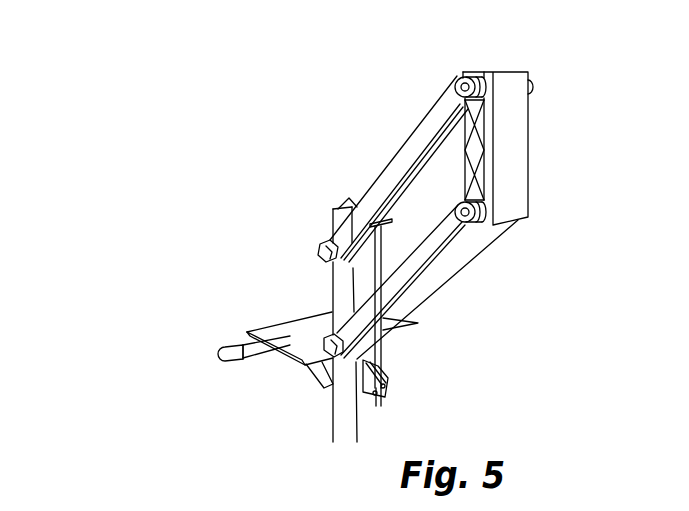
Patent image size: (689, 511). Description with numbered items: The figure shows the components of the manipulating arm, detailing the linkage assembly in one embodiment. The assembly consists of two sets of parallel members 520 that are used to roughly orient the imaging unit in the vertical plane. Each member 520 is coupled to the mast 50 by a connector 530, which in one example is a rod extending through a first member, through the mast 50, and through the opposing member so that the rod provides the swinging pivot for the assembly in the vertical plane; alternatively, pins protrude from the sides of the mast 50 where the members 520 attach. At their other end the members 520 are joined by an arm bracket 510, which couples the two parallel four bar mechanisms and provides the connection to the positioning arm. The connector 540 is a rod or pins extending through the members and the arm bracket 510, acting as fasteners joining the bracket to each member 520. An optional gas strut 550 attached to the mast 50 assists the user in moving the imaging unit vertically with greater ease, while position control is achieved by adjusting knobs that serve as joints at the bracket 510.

The mast 50 is at (333, 290).
The arm bracket 510 is at (514, 143).
The parallel members 520 is at (409, 110).
The connector 530 is at (322, 243).
The connector 540 is at (483, 73).
The gas strut 550 is at (382, 258).